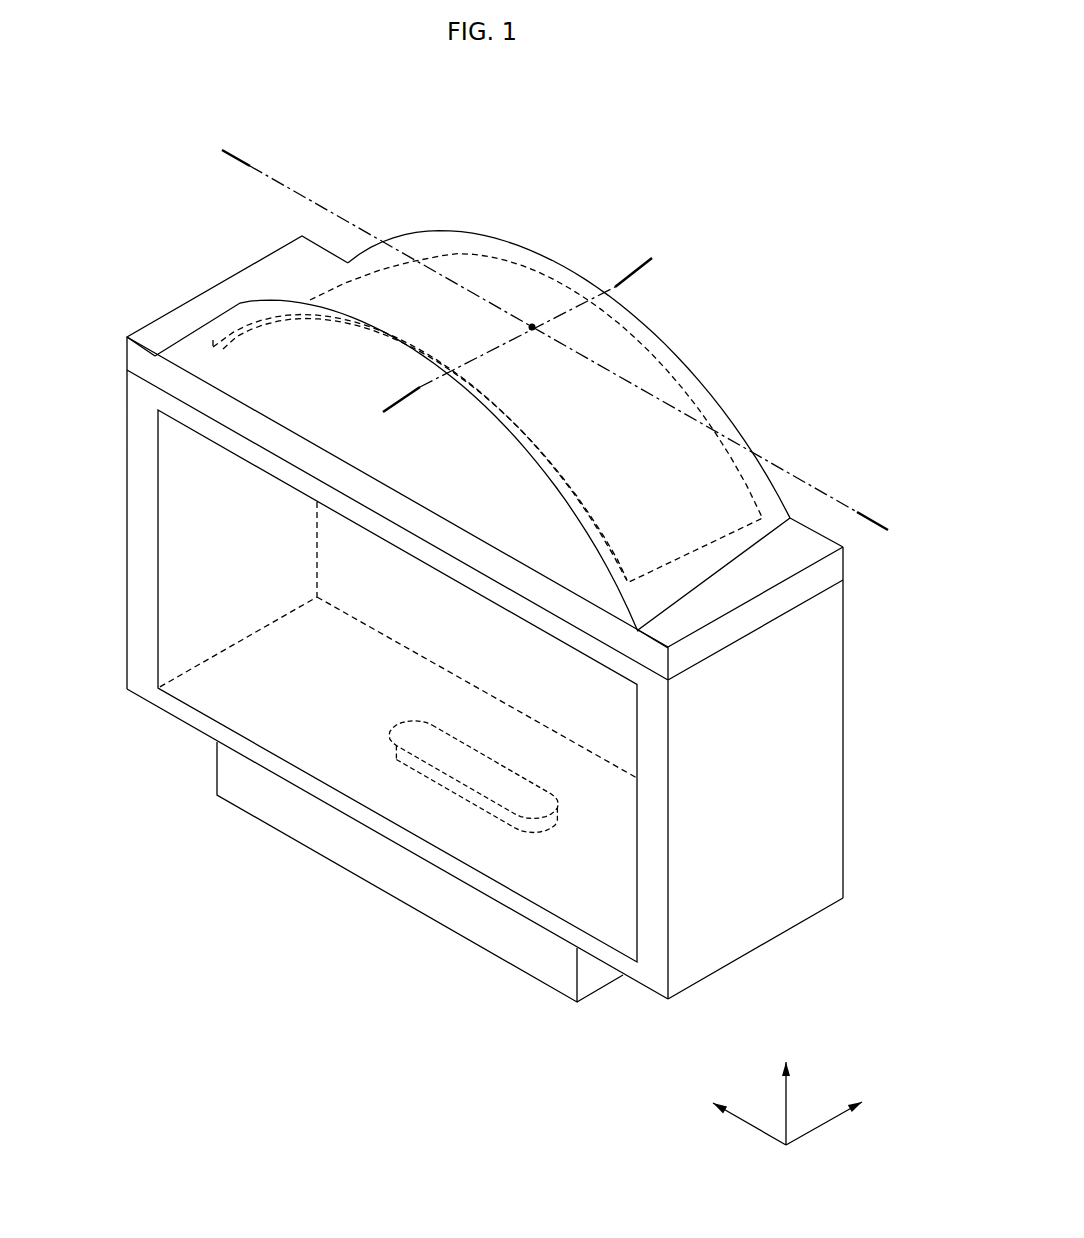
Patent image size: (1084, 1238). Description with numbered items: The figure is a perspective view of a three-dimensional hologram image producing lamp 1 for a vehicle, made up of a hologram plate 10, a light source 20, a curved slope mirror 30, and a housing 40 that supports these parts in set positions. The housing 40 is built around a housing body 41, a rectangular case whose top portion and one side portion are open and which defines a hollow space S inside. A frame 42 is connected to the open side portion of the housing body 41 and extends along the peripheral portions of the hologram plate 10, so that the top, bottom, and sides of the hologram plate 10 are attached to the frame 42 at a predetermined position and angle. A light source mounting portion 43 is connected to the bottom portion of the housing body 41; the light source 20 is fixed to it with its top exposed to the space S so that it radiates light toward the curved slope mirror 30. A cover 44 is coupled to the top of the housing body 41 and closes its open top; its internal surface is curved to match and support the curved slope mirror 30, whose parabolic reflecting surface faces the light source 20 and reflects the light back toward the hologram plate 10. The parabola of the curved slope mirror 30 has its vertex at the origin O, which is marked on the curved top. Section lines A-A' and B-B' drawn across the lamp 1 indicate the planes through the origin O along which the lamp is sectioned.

The 3D hologram image producing lamp 1 is at (824, 94).
The hologram plate 10 is at (178, 500).
The light source 20 is at (477, 757).
The curved slope mirror 30 is at (686, 390).
The housing 40 is at (863, 797).
The housing body 41 is at (812, 726).
The frame 42 is at (130, 411).
The light source mounting portion 43 is at (240, 668).
The cover 44 is at (810, 543).
The space S is at (336, 684).
The origin O is at (533, 342).
The section line A is at (589, 348).
The section line A' is at (259, 142).
The section line B is at (499, 366).
The section line B' is at (656, 285).